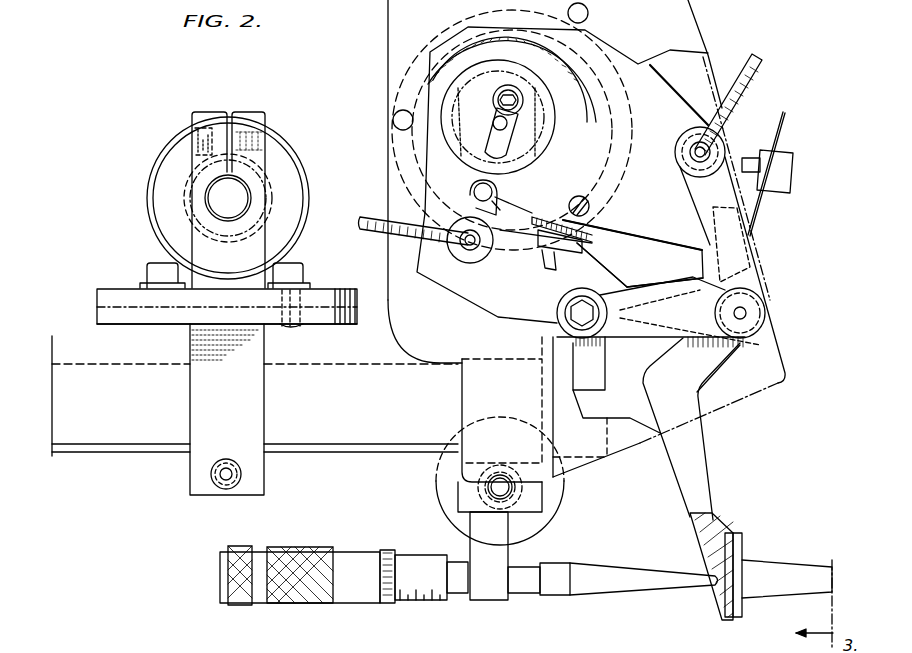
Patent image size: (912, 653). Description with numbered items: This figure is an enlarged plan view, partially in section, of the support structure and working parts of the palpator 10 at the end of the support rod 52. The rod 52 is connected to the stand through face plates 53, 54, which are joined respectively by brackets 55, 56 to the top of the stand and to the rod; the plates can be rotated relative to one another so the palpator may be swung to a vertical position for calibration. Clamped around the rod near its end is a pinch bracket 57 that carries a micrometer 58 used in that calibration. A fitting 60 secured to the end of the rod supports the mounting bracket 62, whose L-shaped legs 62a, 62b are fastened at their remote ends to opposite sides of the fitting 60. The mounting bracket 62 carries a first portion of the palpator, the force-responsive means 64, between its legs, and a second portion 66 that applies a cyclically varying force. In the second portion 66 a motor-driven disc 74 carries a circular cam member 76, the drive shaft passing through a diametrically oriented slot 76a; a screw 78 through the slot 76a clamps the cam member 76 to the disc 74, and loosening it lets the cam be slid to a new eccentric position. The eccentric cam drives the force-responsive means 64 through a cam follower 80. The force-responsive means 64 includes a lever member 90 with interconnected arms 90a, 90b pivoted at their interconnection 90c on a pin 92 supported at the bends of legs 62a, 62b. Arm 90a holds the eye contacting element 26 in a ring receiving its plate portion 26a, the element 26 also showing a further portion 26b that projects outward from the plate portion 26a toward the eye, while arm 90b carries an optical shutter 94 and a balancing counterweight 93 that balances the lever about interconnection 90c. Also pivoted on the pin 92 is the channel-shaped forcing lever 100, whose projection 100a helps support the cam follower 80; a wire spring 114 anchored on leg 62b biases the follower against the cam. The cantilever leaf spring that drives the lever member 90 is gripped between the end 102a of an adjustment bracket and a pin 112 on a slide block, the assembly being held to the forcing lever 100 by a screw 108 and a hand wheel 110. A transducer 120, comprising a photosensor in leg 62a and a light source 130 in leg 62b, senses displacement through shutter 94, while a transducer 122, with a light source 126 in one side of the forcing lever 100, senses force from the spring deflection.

The palpator 10 is at (386, 49).
The eye contacting element 26 is at (748, 546).
The plate portion 26a is at (722, 592).
The tool shank 26b is at (800, 548).
The support rod 52 is at (117, 445).
The face plate 53 is at (110, 292).
The face plate 54 is at (122, 316).
The bracket 55 is at (204, 112).
The bracket 56 is at (205, 490).
The pinch bracket 57 is at (464, 497).
The micrometer 58 is at (370, 600).
The fitting 60 is at (598, 370).
The mounting bracket 62 is at (690, 86).
The leg 62a is at (630, 141).
The leg 62b is at (648, 325).
The force-responsive means 64 is at (618, 250).
The second portion of the palpator 66 is at (556, 81).
The disc 74 is at (463, 143).
The circular cam member 76 is at (562, 110).
The slot 76a is at (503, 137).
The screw 78 is at (496, 100).
The cam follower 80 is at (497, 192).
The lever member 90 is at (676, 481).
The arm 90a is at (705, 468).
The arm 90b is at (738, 229).
The interconnection 90c is at (760, 325).
The pin 92 is at (752, 310).
The balancing counterweight 93 is at (793, 170).
The optical shutter 94 is at (698, 206).
The forcing lever 100 is at (633, 259).
The projection 100a is at (474, 196).
The end of adjustment bracket 102a is at (557, 313).
The screw 108 is at (570, 216).
The hand wheel 110 is at (536, 220).
The pin 112 is at (556, 259).
The wire spring 114 is at (663, 277).
The transducer 120 is at (679, 136).
The transducer 122 is at (450, 265).
The light source 126 is at (466, 256).
The light source 130 is at (720, 135).